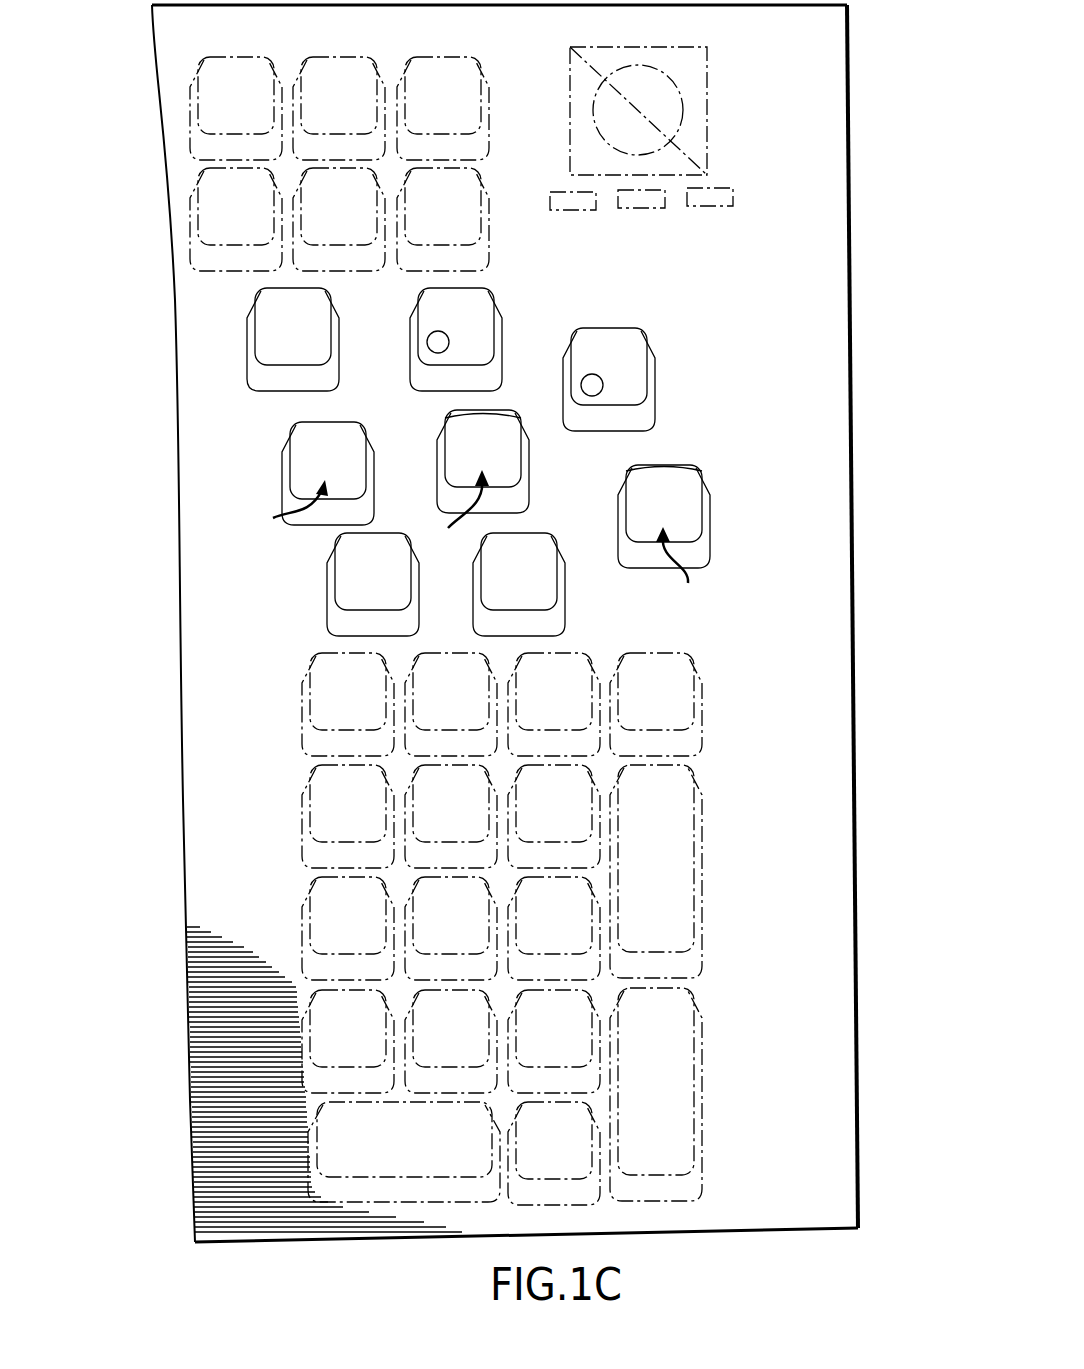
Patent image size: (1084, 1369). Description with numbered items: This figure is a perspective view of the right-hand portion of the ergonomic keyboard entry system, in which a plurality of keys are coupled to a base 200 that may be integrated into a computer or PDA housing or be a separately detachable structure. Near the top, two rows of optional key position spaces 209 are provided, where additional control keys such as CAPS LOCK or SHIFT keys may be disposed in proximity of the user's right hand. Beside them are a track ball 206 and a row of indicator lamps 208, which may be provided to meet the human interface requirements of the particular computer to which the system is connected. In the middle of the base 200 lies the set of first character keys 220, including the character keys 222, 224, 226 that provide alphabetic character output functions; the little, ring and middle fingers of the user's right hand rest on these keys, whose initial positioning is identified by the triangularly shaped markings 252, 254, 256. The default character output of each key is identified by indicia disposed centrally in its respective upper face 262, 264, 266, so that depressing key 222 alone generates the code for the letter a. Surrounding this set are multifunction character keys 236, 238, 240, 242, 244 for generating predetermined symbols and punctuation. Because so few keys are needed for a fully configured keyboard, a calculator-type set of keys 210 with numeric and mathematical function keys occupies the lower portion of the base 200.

The base 200 is at (812, 668).
The track ball 206 is at (707, 130).
The indicator lamps 208 is at (624, 250).
The optional key position spaces 209 is at (176, 98).
The calculator-type set of keys 210 is at (272, 792).
The set of first character keys 220 is at (700, 410).
The first character key 222 is at (712, 522).
The first character key 224 is at (527, 470).
The first character key 226 is at (400, 447).
The multifunction character key 236 is at (247, 348).
The multifunction character key 238 is at (410, 345).
The multifunction character key 240 is at (566, 366).
The multifunction character key 242 is at (560, 592).
The multifunction character key 244 is at (327, 588).
The triangularly shaped marking 252 is at (683, 572).
The triangularly shaped marking 254 is at (455, 517).
The triangularly shaped marking 256 is at (287, 519).
The upper face 262 is at (668, 477).
The upper face 264 is at (478, 422).
The upper face 266 is at (352, 480).